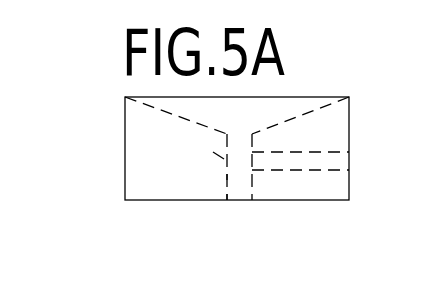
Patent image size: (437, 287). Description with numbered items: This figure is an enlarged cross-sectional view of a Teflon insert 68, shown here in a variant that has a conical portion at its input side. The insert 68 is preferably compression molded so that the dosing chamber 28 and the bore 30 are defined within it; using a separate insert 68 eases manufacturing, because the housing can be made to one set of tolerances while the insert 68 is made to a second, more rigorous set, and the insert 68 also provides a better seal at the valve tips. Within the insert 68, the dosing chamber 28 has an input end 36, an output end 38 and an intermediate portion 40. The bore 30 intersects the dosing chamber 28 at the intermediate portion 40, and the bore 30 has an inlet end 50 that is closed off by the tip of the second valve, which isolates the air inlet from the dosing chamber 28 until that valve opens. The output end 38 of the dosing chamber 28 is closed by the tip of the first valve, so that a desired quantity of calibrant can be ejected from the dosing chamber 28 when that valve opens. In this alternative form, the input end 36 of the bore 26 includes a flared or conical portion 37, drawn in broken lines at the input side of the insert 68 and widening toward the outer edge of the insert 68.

The bore 26 is at (232, 143).
The dosing chamber 28 is at (237, 174).
The bore 30 is at (297, 162).
The input end 36 is at (242, 132).
The conical portion 37 is at (252, 107).
The output end 38 is at (238, 195).
The intermediate portion 40 is at (232, 160).
The inlet end 50 is at (343, 162).
The Teflon insert 68 is at (349, 126).